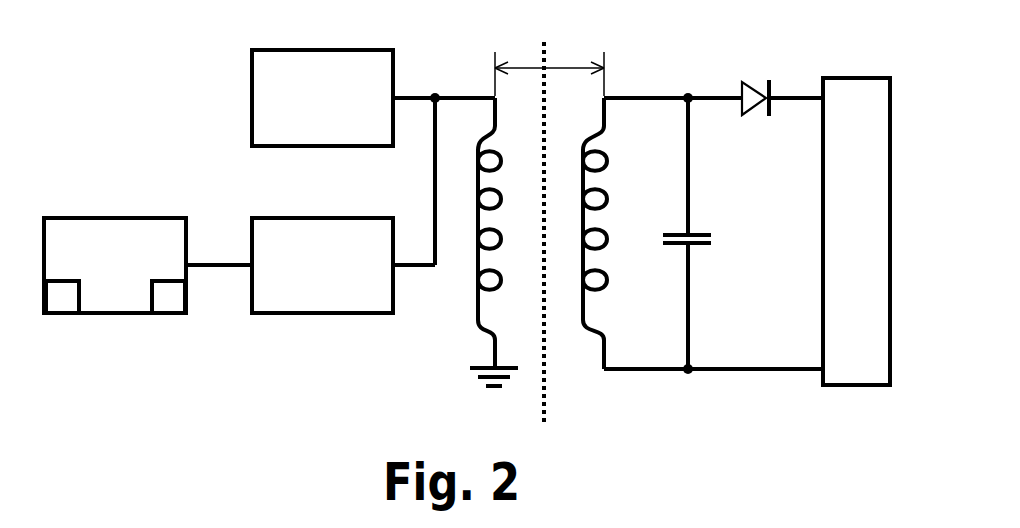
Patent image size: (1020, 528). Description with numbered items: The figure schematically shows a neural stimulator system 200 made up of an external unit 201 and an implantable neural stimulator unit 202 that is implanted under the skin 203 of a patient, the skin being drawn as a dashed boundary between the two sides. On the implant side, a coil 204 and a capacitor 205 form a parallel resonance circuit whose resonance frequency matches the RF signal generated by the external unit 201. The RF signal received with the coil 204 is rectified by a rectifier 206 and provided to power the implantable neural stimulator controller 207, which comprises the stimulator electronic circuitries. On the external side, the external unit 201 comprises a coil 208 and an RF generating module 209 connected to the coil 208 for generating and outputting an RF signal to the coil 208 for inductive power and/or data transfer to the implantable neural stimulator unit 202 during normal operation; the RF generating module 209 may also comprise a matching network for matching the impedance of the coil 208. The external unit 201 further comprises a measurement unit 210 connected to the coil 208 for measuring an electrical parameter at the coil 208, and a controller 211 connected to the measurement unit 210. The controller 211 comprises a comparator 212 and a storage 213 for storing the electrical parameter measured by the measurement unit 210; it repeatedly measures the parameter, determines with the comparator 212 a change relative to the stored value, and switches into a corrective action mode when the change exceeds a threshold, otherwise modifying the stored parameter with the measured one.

The neural stimulator system 200 is at (483, 25).
The external unit 201 is at (86, 51).
The implantable neural stimulator unit 202 is at (866, 44).
The skin 203 is at (547, 382).
The coil 204 is at (607, 200).
The capacitor 205 is at (692, 234).
The rectifier 206 is at (747, 85).
The implantable neural stimulator controller 207 is at (856, 231).
The coil 208 is at (480, 293).
The RF generating module 209 is at (252, 102).
The measurement unit 210 is at (340, 298).
The controller 211 is at (101, 236).
The comparator 212 is at (168, 304).
The storage 213 is at (62, 304).